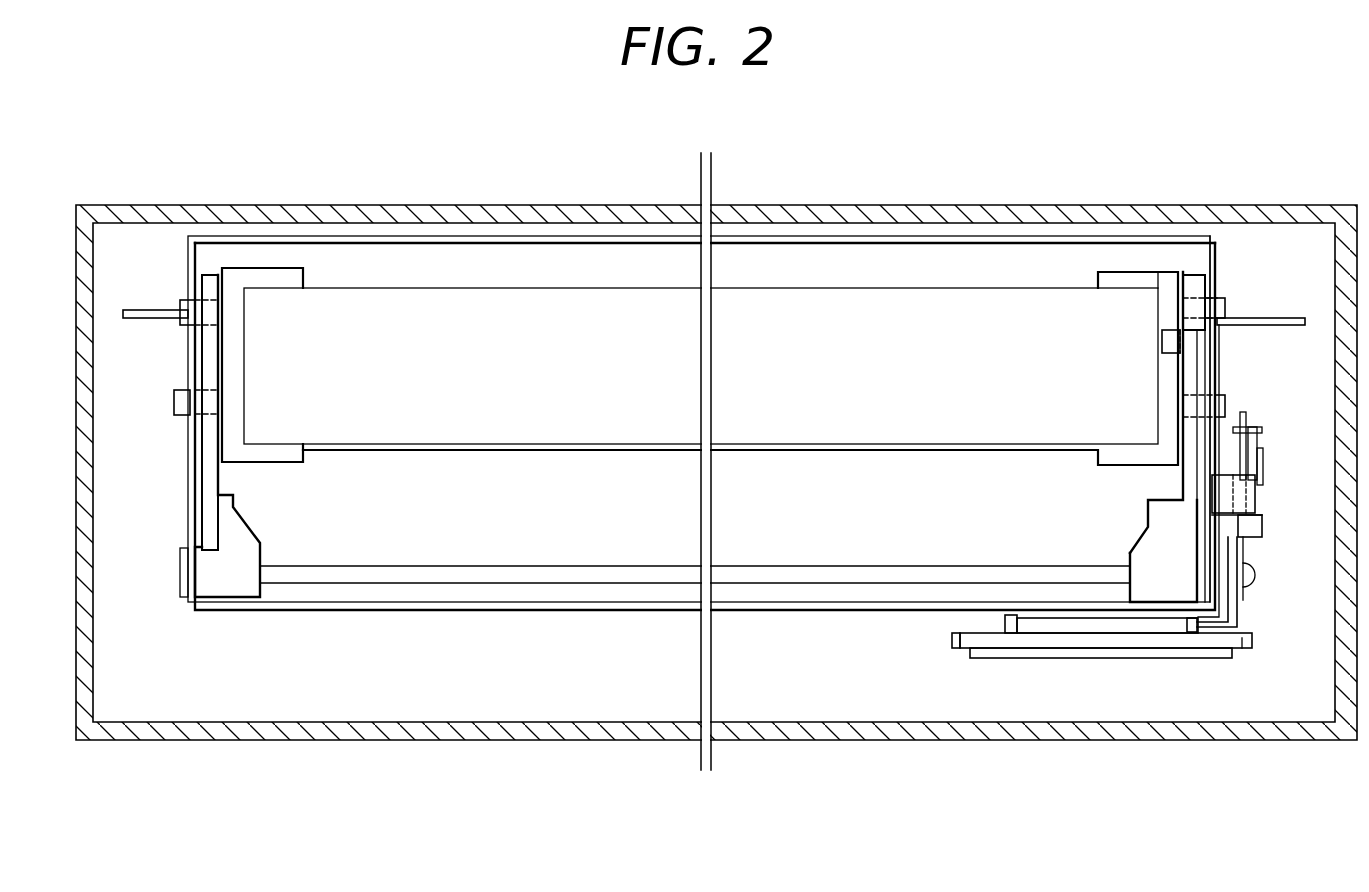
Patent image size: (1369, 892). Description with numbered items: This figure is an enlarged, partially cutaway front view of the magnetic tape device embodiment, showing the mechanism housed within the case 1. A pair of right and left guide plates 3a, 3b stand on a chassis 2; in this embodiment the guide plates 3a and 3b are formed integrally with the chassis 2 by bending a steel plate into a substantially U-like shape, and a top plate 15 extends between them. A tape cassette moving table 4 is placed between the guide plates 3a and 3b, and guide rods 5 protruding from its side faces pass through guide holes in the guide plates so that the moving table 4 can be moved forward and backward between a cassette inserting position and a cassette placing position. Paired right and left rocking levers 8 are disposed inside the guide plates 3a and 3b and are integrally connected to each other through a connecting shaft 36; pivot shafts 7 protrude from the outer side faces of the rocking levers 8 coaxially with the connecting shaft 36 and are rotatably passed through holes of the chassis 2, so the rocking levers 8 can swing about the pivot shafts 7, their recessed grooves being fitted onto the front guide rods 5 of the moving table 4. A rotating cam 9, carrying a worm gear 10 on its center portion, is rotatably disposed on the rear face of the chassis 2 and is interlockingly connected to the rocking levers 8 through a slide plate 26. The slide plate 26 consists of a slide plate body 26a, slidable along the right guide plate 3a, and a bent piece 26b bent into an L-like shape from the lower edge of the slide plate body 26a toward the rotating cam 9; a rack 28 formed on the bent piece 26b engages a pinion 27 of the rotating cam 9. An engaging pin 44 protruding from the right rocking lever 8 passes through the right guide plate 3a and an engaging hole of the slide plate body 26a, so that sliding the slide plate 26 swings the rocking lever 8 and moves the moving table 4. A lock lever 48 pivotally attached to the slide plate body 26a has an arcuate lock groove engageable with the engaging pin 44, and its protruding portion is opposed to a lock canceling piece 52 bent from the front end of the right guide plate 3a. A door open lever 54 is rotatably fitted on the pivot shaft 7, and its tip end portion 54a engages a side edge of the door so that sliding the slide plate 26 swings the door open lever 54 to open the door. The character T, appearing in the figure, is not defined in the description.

The case 1 is at (808, 212).
The tape cartridge T is at (874, 305).
The chassis 2 is at (565, 612).
The right guide plate 3a is at (1183, 470).
The left guide plate 3b is at (188, 516).
The moving table 4 is at (833, 450).
The guide rods 5 is at (183, 305).
The pivot shafts 7 is at (1223, 573).
The rocking levers 8 is at (208, 278).
The rotating cam 9 is at (1040, 661).
The worm gear 10 is at (952, 642).
The top plate 15 is at (610, 248).
The slide plate 26 is at (1265, 686).
The slide plate body 26a is at (1255, 625).
The bent piece 26b is at (1217, 632).
The pinion 27 is at (1108, 630).
The rack 28 is at (1190, 634).
The connecting shaft 36 is at (626, 566).
The engaging pin 44 is at (1262, 525).
The lock lever 48 is at (1243, 415).
The lock canceling piece 52 is at (1257, 492).
The door open lever 54 is at (1198, 373).
The tip end portion 54a is at (1170, 340).